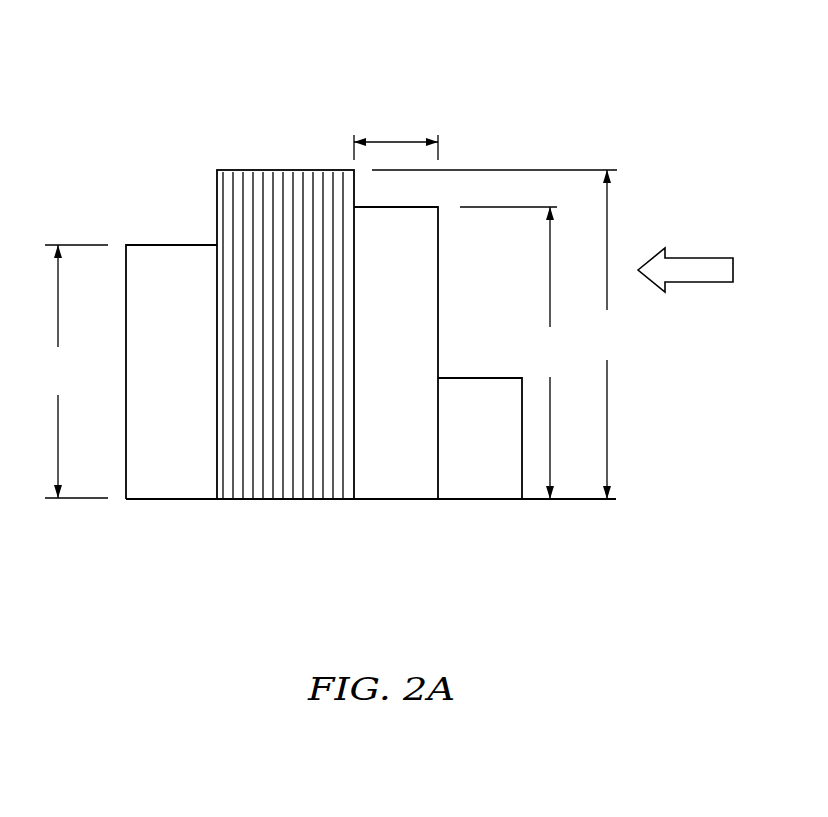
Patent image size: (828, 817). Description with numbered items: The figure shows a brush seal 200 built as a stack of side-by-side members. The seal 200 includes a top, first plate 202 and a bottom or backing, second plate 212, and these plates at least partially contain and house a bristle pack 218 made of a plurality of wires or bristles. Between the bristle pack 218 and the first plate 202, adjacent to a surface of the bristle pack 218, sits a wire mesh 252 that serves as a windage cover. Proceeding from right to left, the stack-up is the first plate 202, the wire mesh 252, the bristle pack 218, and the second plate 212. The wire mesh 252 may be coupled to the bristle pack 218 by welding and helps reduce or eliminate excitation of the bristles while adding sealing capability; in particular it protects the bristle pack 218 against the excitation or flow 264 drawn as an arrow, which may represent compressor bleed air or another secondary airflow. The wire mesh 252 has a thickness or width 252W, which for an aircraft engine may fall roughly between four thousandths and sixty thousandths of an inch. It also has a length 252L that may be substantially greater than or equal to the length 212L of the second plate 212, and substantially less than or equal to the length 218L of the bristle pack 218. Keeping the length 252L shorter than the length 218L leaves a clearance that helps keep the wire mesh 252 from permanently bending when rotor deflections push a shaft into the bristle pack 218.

The seal 200 is at (604, 78).
The first plate 202 is at (477, 500).
The second plate 212 is at (174, 500).
The length of the plate 212L is at (69, 371).
The bristle pack 218 is at (288, 500).
The length of the bristle pack 218L is at (505, 334).
The wire mesh 252 is at (395, 500).
The length of the wire mesh 252L is at (520, 353).
The width of the wire mesh 252W is at (398, 141).
The excitation/flow 264 is at (693, 258).